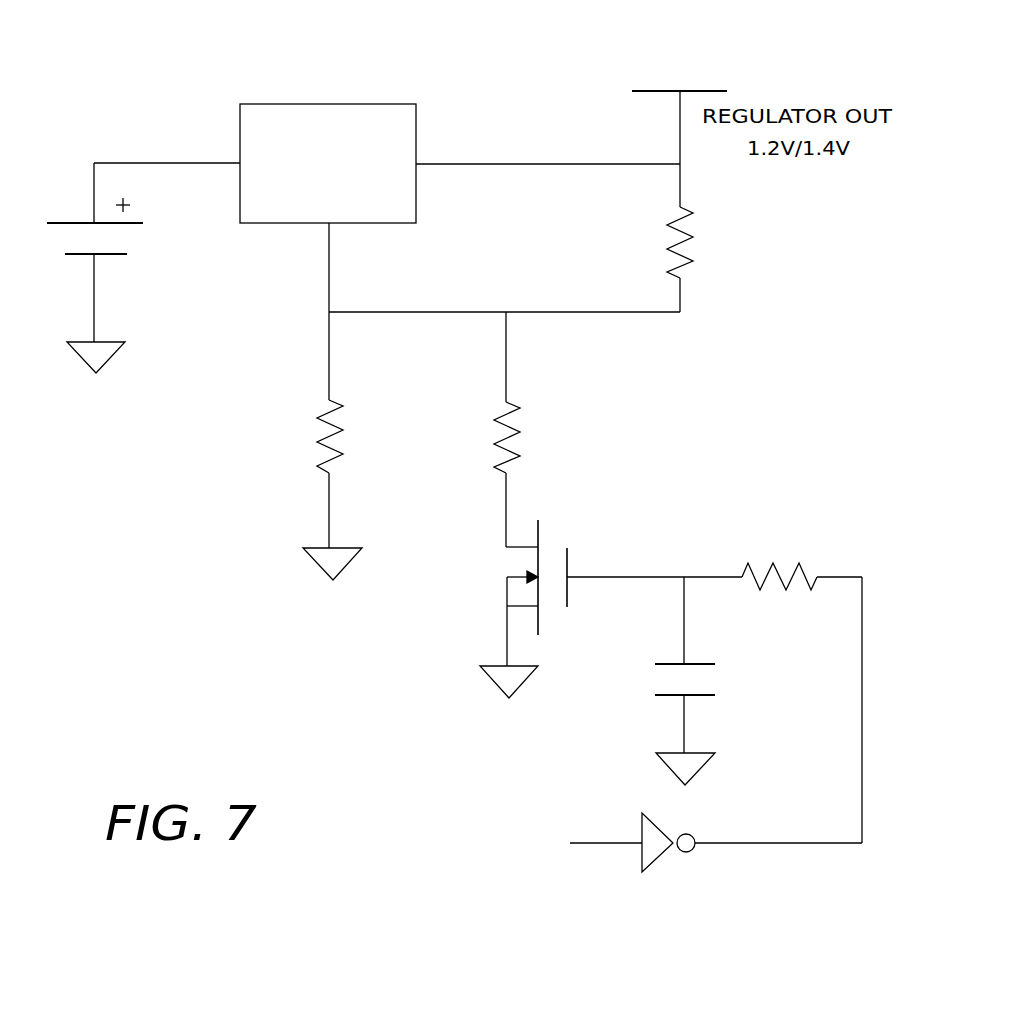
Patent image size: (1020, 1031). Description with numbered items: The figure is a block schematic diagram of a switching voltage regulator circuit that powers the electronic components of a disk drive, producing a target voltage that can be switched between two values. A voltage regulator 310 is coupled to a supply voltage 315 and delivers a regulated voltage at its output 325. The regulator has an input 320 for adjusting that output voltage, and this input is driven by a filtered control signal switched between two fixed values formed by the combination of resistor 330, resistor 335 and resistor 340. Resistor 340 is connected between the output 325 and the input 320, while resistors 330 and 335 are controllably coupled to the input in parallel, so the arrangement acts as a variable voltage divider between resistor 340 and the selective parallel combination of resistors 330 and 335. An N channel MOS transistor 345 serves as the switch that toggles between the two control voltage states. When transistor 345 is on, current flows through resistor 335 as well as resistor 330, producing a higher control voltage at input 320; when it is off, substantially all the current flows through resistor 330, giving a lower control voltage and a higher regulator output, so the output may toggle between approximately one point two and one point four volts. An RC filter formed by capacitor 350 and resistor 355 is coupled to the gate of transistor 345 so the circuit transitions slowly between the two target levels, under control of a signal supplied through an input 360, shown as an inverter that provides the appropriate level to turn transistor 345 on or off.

The voltage regulator 310 is at (386, 103).
The supply voltage 315 is at (91, 222).
The input 320 is at (328, 226).
The output voltage 325 is at (477, 163).
The resistor 330 is at (330, 415).
The resistor 335 is at (507, 415).
The resistor 340 is at (678, 270).
The N channel MOS transistor 345 is at (538, 548).
The capacitor 350 is at (657, 693).
The resistor 355 is at (815, 567).
The input 360 is at (642, 873).